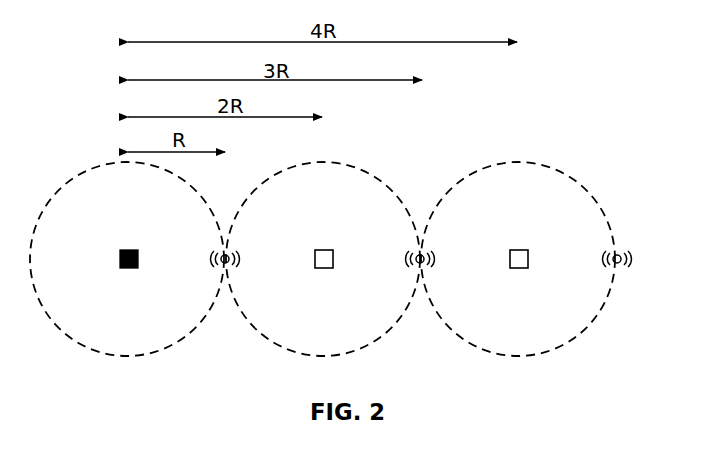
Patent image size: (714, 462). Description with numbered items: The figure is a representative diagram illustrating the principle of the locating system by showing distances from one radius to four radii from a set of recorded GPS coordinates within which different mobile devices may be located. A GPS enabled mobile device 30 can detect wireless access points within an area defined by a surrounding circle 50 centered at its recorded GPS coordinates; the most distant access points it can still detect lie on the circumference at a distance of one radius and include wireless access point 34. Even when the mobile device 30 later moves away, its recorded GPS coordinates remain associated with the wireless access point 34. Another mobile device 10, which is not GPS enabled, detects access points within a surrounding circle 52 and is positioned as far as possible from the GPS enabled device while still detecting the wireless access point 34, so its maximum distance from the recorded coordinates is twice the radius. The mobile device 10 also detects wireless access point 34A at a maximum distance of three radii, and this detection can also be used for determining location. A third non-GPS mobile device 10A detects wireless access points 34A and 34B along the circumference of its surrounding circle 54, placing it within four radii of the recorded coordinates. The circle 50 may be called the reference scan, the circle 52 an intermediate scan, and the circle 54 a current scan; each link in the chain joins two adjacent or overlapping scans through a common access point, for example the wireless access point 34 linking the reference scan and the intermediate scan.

The mobile device 10 is at (320, 268).
The third mobile device 10A is at (517, 269).
The mobile device 30 is at (120, 268).
The wireless access point 34 is at (212, 262).
The wireless access point 34A is at (408, 263).
The wireless access point 34B is at (628, 267).
The surrounding circle 50 is at (57, 194).
The surrounding circle 52 is at (385, 182).
The surrounding circle 54 is at (553, 165).